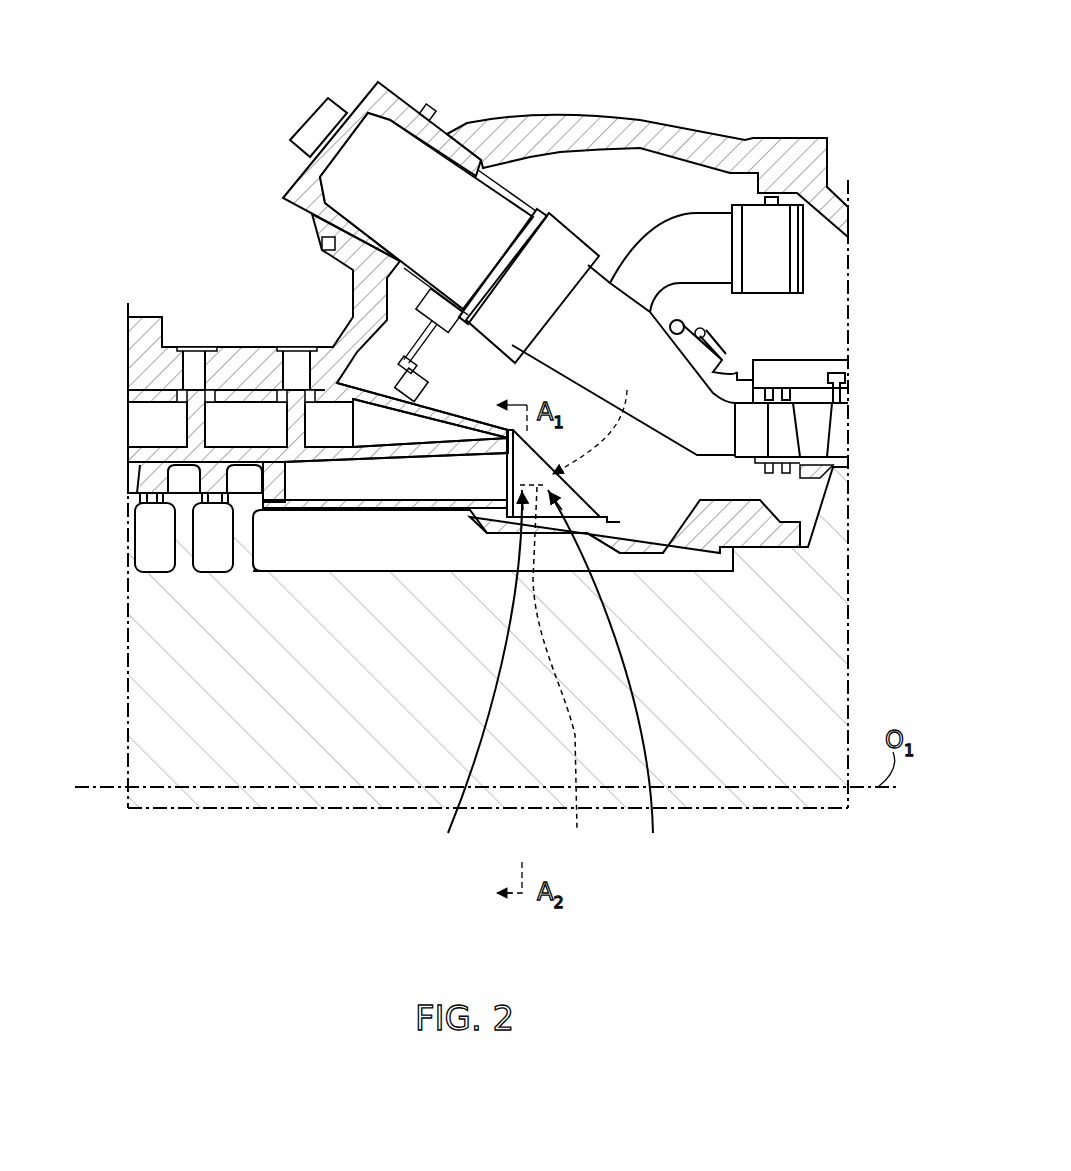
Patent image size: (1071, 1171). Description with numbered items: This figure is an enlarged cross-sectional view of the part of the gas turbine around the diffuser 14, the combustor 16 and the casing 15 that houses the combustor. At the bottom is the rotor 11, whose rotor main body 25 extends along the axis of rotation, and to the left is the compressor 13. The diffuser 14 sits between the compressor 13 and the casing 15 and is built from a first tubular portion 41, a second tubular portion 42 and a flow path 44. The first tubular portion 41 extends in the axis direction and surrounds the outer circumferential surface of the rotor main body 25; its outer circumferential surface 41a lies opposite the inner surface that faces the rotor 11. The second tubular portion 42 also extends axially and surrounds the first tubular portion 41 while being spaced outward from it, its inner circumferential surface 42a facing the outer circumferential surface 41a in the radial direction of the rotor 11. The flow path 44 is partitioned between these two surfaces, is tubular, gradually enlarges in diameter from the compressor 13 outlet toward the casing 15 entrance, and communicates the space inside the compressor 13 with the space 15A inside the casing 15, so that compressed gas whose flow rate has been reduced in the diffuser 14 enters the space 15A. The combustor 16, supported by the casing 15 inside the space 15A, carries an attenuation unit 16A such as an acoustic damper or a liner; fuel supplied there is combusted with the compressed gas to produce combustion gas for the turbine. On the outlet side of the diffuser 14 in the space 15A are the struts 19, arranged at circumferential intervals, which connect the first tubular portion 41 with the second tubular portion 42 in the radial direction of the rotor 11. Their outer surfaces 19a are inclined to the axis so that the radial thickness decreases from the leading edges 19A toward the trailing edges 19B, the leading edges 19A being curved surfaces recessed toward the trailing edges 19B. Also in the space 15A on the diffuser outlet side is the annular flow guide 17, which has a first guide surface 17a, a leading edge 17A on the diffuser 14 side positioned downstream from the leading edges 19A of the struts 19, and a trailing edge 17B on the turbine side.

The rotor 11 is at (147, 672).
The compressor 13 is at (178, 330).
The diffuser 14 is at (352, 444).
The casing 15 is at (683, 130).
The space 15A is at (690, 187).
The combustor 16 is at (532, 200).
The attenuation unit 16A is at (573, 248).
The flow guide 17 is at (580, 424).
The leading edge 17A is at (473, 677).
The trailing edge 17B is at (612, 677).
The first guide surface 17a is at (563, 675).
The struts 19 is at (575, 486).
The leading edges 19A is at (515, 477).
The outer surfaces 19a is at (520, 486).
The trailing edges 19B is at (600, 517).
The rotor main body 25 is at (845, 673).
The first tubular portion 41 is at (465, 503).
The outer circumferential surface 41a is at (437, 497).
The second tubular portion 42 is at (360, 452).
The inner circumferential surface 42a is at (327, 453).
The flow path 44 is at (398, 478).